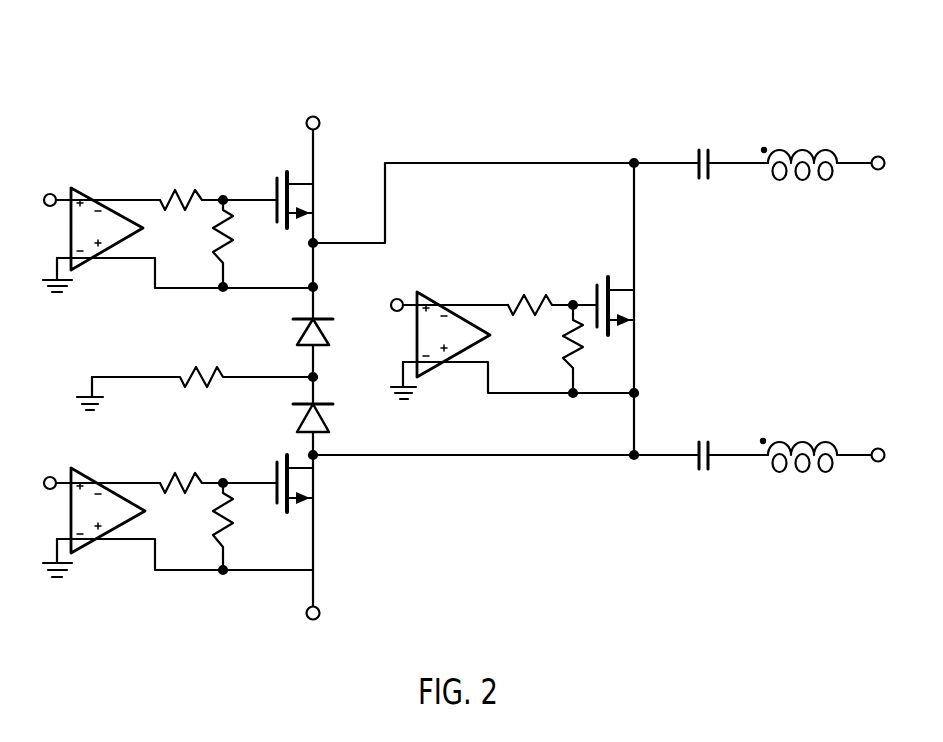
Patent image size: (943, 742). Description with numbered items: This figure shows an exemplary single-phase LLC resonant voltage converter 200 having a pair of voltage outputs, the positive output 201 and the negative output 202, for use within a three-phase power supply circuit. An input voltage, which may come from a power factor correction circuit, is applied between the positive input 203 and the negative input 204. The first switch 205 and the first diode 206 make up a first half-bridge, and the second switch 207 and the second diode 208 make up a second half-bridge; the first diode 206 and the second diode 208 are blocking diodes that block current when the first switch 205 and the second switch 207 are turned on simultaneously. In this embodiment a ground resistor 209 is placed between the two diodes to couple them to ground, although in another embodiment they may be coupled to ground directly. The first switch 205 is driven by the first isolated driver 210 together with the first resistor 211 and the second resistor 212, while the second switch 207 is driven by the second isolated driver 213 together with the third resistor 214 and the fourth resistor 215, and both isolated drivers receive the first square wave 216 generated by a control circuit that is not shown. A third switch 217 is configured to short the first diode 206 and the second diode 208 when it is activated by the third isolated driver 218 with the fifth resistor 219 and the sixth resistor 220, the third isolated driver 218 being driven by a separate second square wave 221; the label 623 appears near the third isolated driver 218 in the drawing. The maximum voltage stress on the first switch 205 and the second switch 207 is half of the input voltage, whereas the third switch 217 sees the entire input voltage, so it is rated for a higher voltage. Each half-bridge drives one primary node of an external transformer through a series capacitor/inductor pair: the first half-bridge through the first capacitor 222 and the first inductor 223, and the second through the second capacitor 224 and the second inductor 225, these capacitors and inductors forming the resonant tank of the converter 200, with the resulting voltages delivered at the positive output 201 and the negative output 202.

The single-phase LLC resonant voltage converter 200 is at (195, 48).
The voltage output OUT+ 201 is at (878, 156).
The voltage output OUT− 202 is at (879, 448).
The input DC+ 203 is at (321, 124).
The input DC− 204 is at (320, 614).
The switch Q1 205 is at (277, 473).
The diode D1 206 is at (320, 403).
The switch Q2 207 is at (276, 198).
The diode D2 208 is at (297, 319).
The resistor R10 209 is at (212, 388).
The isolated driver E1 210 is at (80, 468).
The resistor R1 211 is at (166, 480).
The resistor R2 212 is at (213, 508).
The isolated driver E2 213 is at (82, 186).
The resistor R3 214 is at (213, 228).
The resistor R4 215 is at (165, 197).
The square wave AA 216 is at (50, 207).
The switch Q3 217 is at (595, 291).
The isolated driver E3 218 is at (423, 290).
The resistor R5 219 is at (507, 298).
The resistor R6 220 is at (568, 342).
The square wave BB 221 is at (396, 312).
The capacitor C1 222 is at (713, 470).
The inductor L1 223 is at (830, 468).
The capacitor C2 224 is at (713, 178).
The inductor L2 225 is at (830, 176).
The ground connection of operational amplifier E3 623 is at (512, 380).